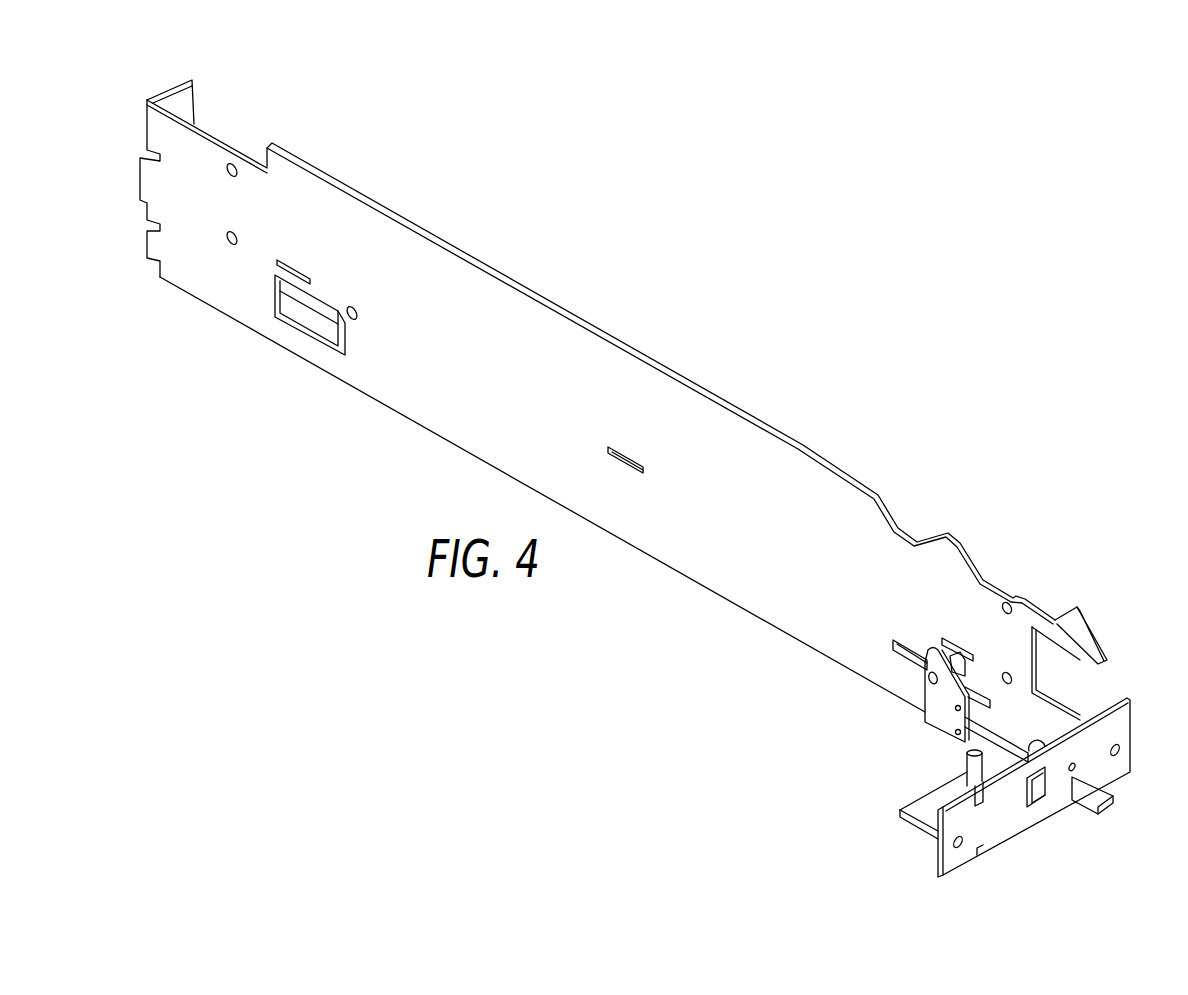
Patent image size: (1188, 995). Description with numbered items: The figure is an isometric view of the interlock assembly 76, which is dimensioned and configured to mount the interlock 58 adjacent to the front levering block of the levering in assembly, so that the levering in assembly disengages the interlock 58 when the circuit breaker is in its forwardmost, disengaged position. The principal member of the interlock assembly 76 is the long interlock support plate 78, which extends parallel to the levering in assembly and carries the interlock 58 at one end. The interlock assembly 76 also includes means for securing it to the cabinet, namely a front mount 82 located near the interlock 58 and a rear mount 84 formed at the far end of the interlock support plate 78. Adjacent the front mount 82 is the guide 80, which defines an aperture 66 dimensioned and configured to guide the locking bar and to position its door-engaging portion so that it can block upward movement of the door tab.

The interlock 58 is at (845, 731).
The aperture 66 is at (1090, 800).
The interlock assembly 76 is at (623, 373).
The interlock support plate 78 is at (488, 367).
The guide 80 is at (962, 857).
The front mount 82 is at (918, 810).
The rear mount 84 is at (192, 80).